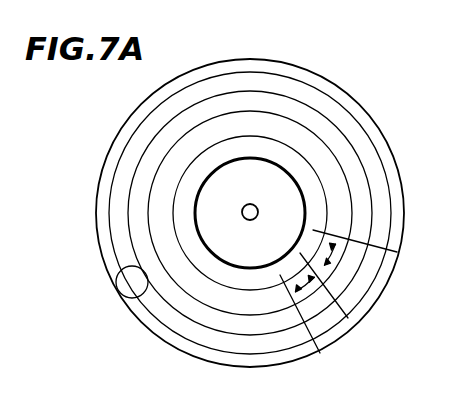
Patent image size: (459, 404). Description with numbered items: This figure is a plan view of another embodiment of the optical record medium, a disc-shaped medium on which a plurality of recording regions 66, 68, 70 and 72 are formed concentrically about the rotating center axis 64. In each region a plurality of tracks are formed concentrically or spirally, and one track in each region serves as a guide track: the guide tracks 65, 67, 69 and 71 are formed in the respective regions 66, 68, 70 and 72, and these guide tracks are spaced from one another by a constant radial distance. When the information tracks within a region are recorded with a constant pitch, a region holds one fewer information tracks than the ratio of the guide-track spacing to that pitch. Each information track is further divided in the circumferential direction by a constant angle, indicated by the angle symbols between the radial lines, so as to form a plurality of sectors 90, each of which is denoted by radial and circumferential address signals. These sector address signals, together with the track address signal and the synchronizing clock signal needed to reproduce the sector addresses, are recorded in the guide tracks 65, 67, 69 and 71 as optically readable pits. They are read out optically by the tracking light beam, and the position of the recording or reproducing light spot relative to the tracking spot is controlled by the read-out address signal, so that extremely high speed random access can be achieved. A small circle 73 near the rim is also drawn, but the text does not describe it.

The rotating center axis 64 is at (242, 212).
The guide track 65 is at (328, 93).
The recording region 66 is at (352, 125).
The guide track 67 is at (300, 88).
The recording region 68 is at (338, 144).
The guide track 69 is at (268, 110).
The recording region 70 is at (328, 169).
The guide track 71 is at (233, 137).
The recording region 72 is at (315, 196).
The index hole 73 is at (122, 291).
The sector 90 is at (323, 300).